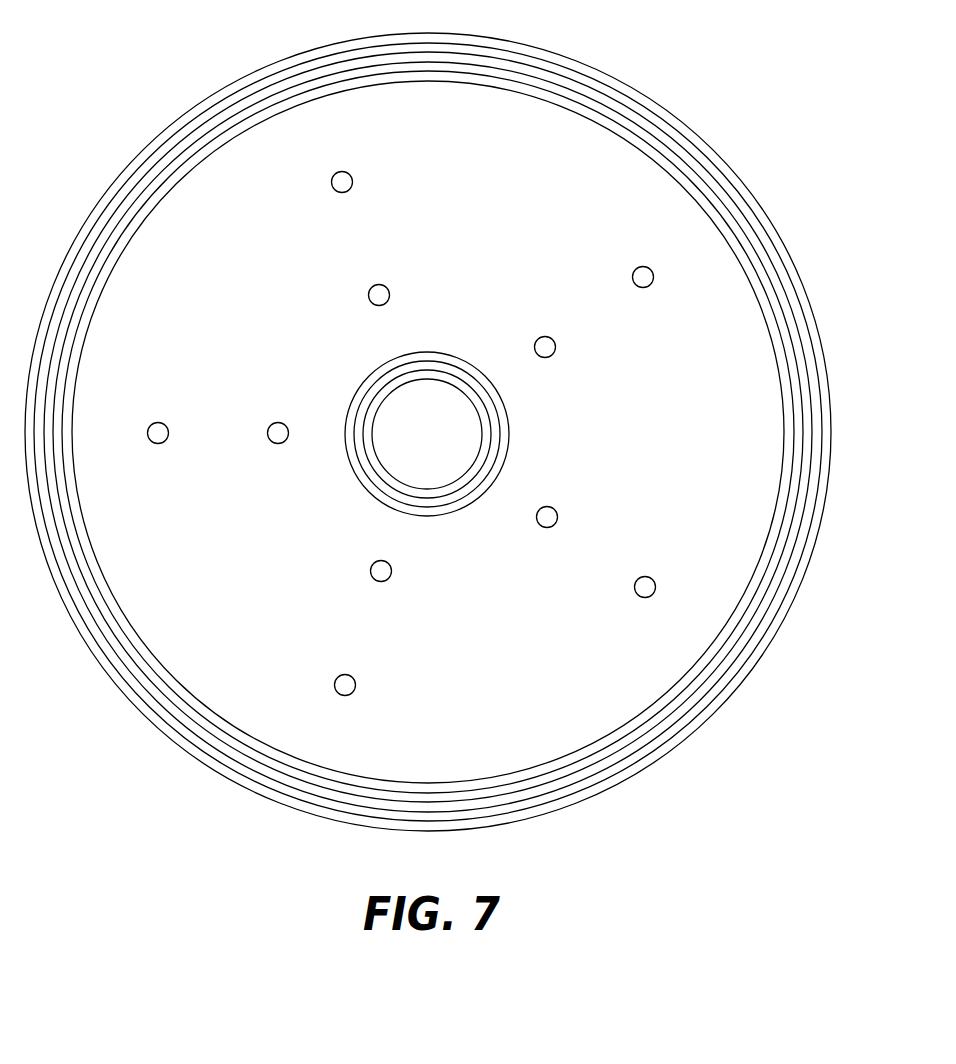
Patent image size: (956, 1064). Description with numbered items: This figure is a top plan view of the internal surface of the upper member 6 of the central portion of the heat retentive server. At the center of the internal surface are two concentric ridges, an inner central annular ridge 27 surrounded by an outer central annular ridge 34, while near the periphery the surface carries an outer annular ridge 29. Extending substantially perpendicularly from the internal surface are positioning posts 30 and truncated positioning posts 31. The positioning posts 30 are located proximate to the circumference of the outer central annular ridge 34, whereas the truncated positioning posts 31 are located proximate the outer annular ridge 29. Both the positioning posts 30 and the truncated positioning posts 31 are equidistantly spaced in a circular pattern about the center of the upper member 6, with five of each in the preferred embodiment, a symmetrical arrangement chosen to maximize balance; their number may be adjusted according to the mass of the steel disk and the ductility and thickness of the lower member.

The upper member 6 is at (620, 76).
The outer annular ridge 29 is at (745, 600).
The outer central annular ridge 34 is at (372, 375).
The inner central annular ridge 27 is at (427, 378).
The positioning posts 30 is at (556, 352).
The truncated positioning posts 31 is at (634, 585).